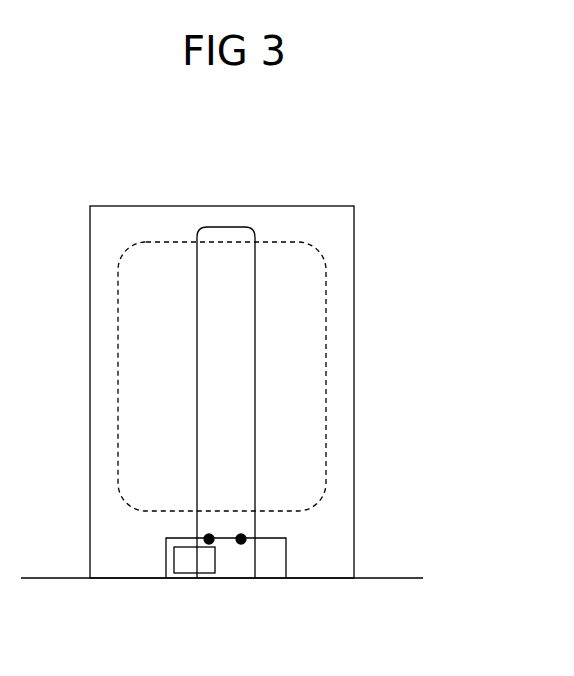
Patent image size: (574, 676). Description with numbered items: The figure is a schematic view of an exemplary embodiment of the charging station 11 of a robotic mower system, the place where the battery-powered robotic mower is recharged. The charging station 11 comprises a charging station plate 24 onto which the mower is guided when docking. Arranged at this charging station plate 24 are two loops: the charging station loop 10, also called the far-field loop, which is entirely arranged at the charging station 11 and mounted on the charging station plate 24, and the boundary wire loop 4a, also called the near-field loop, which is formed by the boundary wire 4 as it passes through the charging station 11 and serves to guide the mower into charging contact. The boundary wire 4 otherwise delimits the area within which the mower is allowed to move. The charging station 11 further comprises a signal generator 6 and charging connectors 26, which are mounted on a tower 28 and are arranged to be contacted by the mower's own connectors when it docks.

The charging station 11 is at (90, 348).
The charging station plate 24 is at (305, 220).
The charging station loop 10 is at (326, 339).
The boundary wire loop 4a is at (257, 423).
The tower 28 is at (287, 562).
The signal generator 6 is at (183, 560).
The charging connectors 26 is at (207, 536).
The boundary wire 4 is at (382, 577).